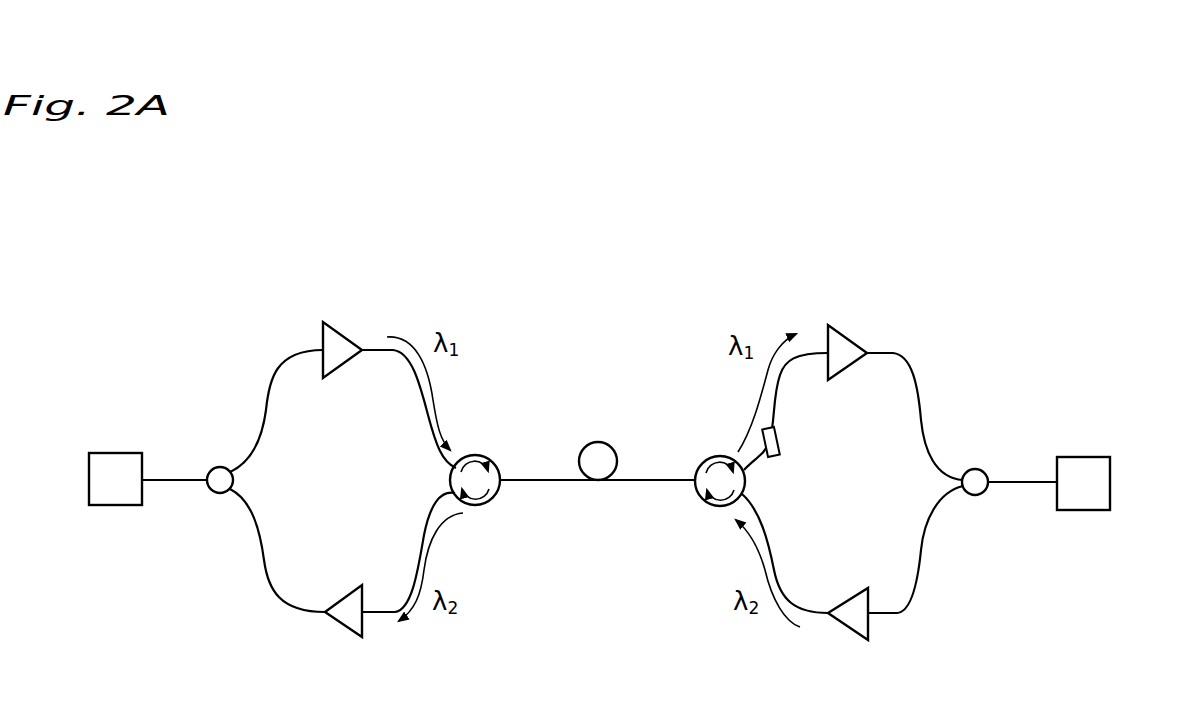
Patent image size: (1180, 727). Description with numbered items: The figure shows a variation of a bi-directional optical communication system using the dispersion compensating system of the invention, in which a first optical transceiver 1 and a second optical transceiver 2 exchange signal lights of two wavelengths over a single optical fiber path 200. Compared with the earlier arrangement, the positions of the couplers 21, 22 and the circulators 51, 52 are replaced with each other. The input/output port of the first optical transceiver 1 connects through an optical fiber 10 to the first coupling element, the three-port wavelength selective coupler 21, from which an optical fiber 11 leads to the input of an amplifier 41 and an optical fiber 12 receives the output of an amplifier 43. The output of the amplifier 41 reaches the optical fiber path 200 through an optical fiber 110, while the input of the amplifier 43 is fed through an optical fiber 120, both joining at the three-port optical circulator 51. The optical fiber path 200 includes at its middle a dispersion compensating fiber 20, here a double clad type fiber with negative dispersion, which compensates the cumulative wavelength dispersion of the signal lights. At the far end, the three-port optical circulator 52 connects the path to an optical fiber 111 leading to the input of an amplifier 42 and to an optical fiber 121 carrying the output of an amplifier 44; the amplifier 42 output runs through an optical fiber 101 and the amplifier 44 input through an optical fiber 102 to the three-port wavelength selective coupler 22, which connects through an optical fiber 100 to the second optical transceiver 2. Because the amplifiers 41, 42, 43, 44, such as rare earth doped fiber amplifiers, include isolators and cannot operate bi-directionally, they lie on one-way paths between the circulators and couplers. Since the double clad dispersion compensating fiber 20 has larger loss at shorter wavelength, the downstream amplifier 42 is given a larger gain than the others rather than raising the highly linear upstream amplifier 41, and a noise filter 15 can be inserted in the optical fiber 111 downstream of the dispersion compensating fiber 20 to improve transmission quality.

The first optical transceiver 1 is at (114, 453).
The second optical transceiver 2 is at (1082, 457).
The optical fiber 10 is at (160, 487).
The optical fiber 100 is at (1027, 485).
The optical fiber 11 is at (271, 367).
The optical fiber 12 is at (275, 592).
The optical fiber 110 is at (397, 363).
The optical fiber 120 is at (400, 598).
The optical fiber 111 is at (790, 363).
The optical fiber 121 is at (795, 598).
The optical fiber 101 is at (917, 372).
The optical fiber 102 is at (920, 595).
The 3-port wavelength selective coupler 21 is at (212, 493).
The 3-port wavelength selective coupler 22 is at (966, 497).
The amplifier 41 is at (347, 331).
The amplifier 42 is at (855, 333).
The amplifier 43 is at (343, 628).
The amplifier 44 is at (850, 632).
The 3-port optical circulator 51 is at (477, 508).
The 3-port optical circulator 52 is at (701, 503).
The dispersion compensating fiber 20 is at (618, 458).
The optical fiber path 200 is at (552, 483).
The noise filter 15 is at (778, 447).